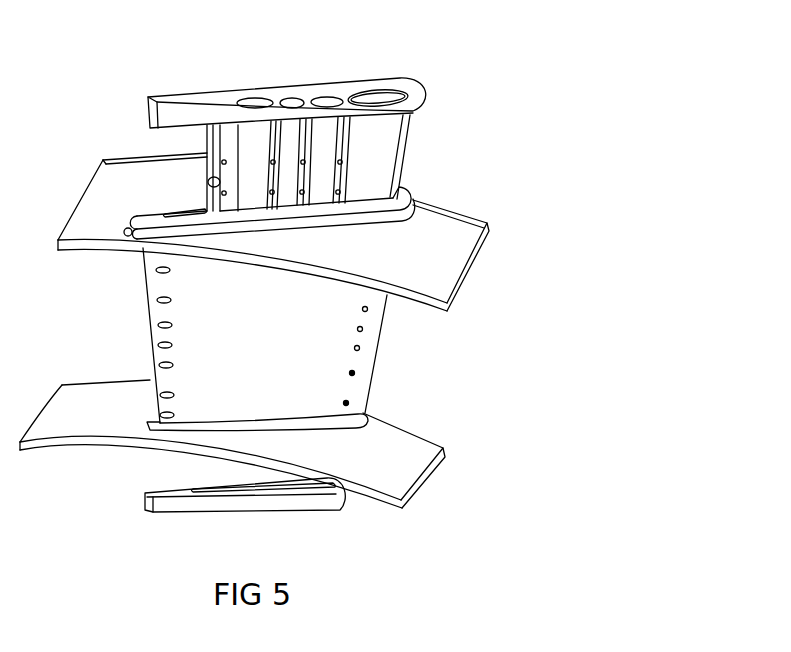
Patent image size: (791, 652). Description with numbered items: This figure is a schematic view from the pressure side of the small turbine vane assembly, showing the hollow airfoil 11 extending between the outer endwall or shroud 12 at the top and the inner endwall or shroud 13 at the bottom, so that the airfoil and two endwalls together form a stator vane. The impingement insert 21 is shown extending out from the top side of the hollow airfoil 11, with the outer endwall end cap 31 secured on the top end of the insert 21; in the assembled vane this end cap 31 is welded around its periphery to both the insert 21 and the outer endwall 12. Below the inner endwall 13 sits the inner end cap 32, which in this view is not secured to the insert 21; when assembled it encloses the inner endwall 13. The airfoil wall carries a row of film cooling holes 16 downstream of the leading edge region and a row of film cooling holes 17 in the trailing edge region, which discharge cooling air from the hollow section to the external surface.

The airfoil 11 is at (258, 339).
The outer endwall or shroud 12 is at (440, 248).
The inner endwall or shroud 13 is at (397, 458).
The film cooling holes 16 is at (360, 329).
The film cooling holes 17 is at (163, 325).
The impingement insert 21 is at (377, 152).
The outer endwall end cap 31 is at (403, 85).
The inner end cap 32 is at (293, 505).